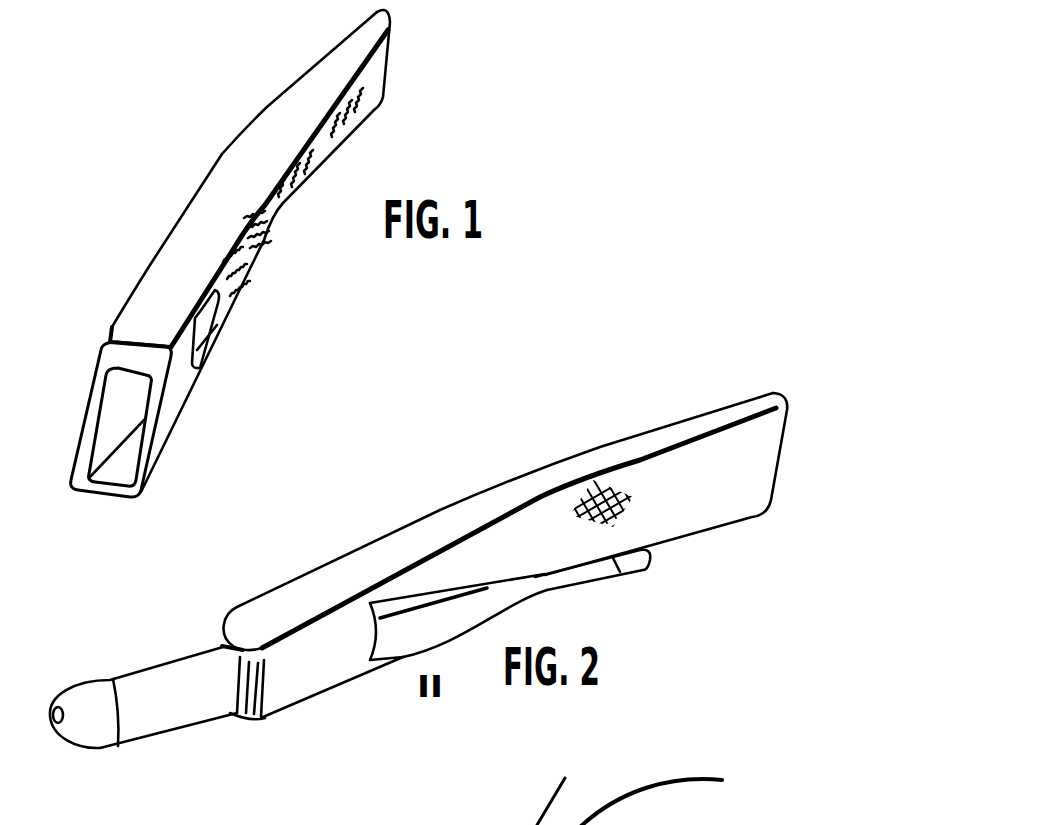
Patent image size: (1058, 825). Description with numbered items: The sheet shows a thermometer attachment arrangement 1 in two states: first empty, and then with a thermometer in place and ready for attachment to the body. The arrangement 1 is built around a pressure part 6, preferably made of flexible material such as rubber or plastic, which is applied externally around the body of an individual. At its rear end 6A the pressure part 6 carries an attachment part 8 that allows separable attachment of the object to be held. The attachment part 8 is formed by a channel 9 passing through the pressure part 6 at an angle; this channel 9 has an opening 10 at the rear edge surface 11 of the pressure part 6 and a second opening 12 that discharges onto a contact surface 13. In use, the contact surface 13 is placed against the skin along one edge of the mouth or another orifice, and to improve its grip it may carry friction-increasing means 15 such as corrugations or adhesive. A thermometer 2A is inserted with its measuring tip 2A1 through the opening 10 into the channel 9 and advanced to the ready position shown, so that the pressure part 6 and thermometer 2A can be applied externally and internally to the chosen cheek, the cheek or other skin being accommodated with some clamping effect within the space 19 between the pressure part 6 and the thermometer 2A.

In FIG. 2, the arrangement 1 is at (418, 574).
In FIG. 2, the thermometer 2A is at (140, 723).
In FIG. 2, the measuring tip 2A1 is at (637, 567).
In FIG. 1, the pressure part 6 is at (190, 200).
In FIG. 2, the pressure part 6 is at (429, 505).
In FIG. 1, the rear end 6A is at (181, 423).
In FIG. 1, the attachment part 8 is at (245, 358).
In FIG. 2, the attachment part 8 is at (214, 634).
In FIG. 1, the channel 9 is at (122, 388).
In FIG. 1, the opening 10 is at (108, 432).
In FIG. 1, the rear edge surface 11 is at (105, 493).
In FIG. 2, the rear edge surface 11 is at (243, 720).
In FIG. 1, the opening 12 is at (207, 315).
In FIG. 1, the contact surface 13 is at (214, 280).
In FIG. 2, the contact surface 13 is at (703, 463).
In FIG. 1, the friction-increasing means 15 is at (306, 153).
In FIG. 2, the friction-increasing means 15 is at (612, 484).
In FIG. 2, the space 19 is at (493, 565).